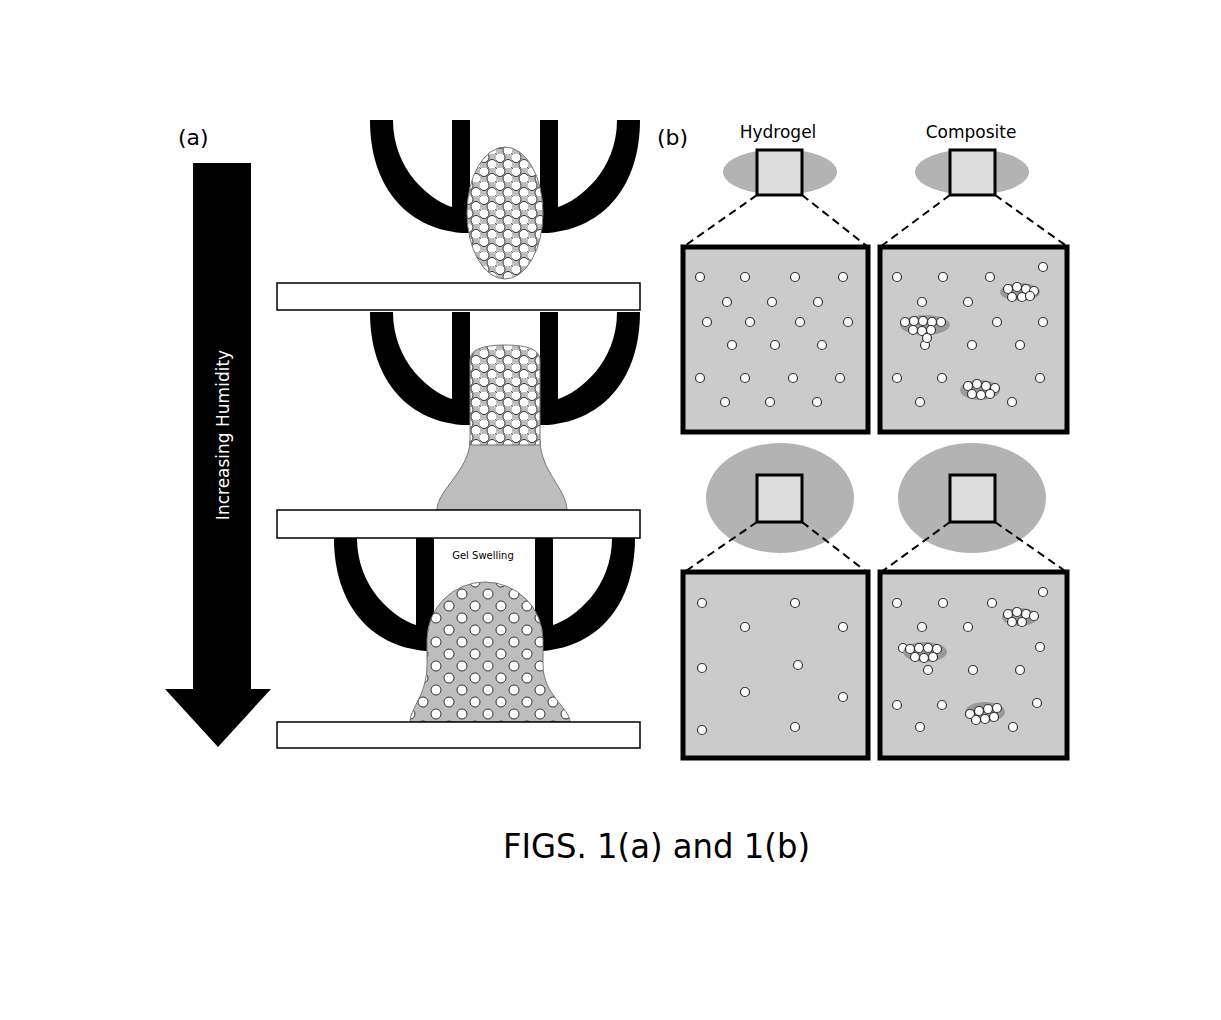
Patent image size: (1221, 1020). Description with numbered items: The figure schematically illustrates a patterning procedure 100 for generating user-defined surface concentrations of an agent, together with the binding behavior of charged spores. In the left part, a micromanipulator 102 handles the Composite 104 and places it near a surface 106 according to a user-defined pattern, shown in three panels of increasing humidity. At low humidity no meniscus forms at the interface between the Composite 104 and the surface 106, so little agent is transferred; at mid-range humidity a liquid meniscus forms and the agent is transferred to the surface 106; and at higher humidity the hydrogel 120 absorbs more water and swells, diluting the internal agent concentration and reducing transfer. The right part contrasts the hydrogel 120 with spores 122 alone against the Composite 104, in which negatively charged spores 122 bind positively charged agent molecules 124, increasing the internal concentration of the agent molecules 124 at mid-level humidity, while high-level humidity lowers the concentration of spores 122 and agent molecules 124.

In FIG. 1A, the patterning procedure 100 is at (303, 90).
In FIG. 1A, the micromanipulator 102 is at (622, 118).
In FIG. 1A, the Composite 104 is at (488, 134).
In FIG. 1A, the surface 106 is at (440, 282).
In FIG. 1B, the hydrogel 120 is at (1031, 406).
In FIG. 1B, the spores 122 is at (1034, 621).
In FIG. 1B, the agent molecules 124 is at (1014, 730).